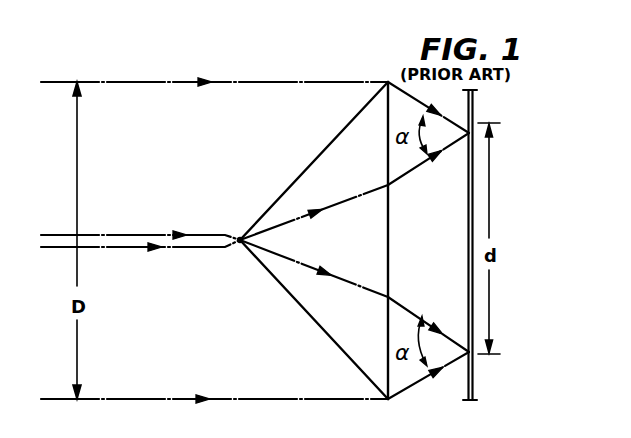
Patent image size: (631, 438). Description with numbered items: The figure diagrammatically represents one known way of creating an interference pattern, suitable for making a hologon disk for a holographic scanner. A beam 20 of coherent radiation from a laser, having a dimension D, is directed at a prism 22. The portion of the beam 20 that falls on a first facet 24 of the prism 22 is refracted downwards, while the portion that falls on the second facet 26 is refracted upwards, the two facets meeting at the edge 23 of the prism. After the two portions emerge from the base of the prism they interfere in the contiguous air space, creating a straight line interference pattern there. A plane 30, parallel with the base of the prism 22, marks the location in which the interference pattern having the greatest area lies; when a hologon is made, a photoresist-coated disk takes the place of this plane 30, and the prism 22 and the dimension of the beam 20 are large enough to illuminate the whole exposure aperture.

The beam 20 is at (176, 66).
The prism 22 is at (316, 127).
The edge 23 is at (238, 240).
The first facet 24 is at (303, 158).
The second facet 26 is at (303, 320).
The plane 30 is at (466, 209).